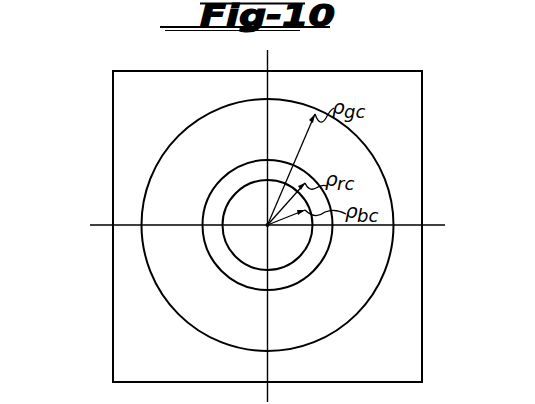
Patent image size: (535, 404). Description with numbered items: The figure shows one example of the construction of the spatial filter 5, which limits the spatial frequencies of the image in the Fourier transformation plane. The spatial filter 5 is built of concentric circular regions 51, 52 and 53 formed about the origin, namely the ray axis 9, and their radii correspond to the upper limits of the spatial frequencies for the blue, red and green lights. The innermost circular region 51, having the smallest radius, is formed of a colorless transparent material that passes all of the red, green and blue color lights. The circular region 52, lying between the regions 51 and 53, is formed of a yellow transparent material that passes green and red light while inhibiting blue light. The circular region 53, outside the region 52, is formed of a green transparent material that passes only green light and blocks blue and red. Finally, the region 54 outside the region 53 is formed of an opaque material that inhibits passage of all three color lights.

The spatial filter 5 is at (257, 216).
The ray axis 9 is at (279, 245).
The circular region 51 is at (191, 225).
The circular region 52 is at (201, 225).
The circular region 53 is at (231, 225).
The region 54 is at (245, 226).